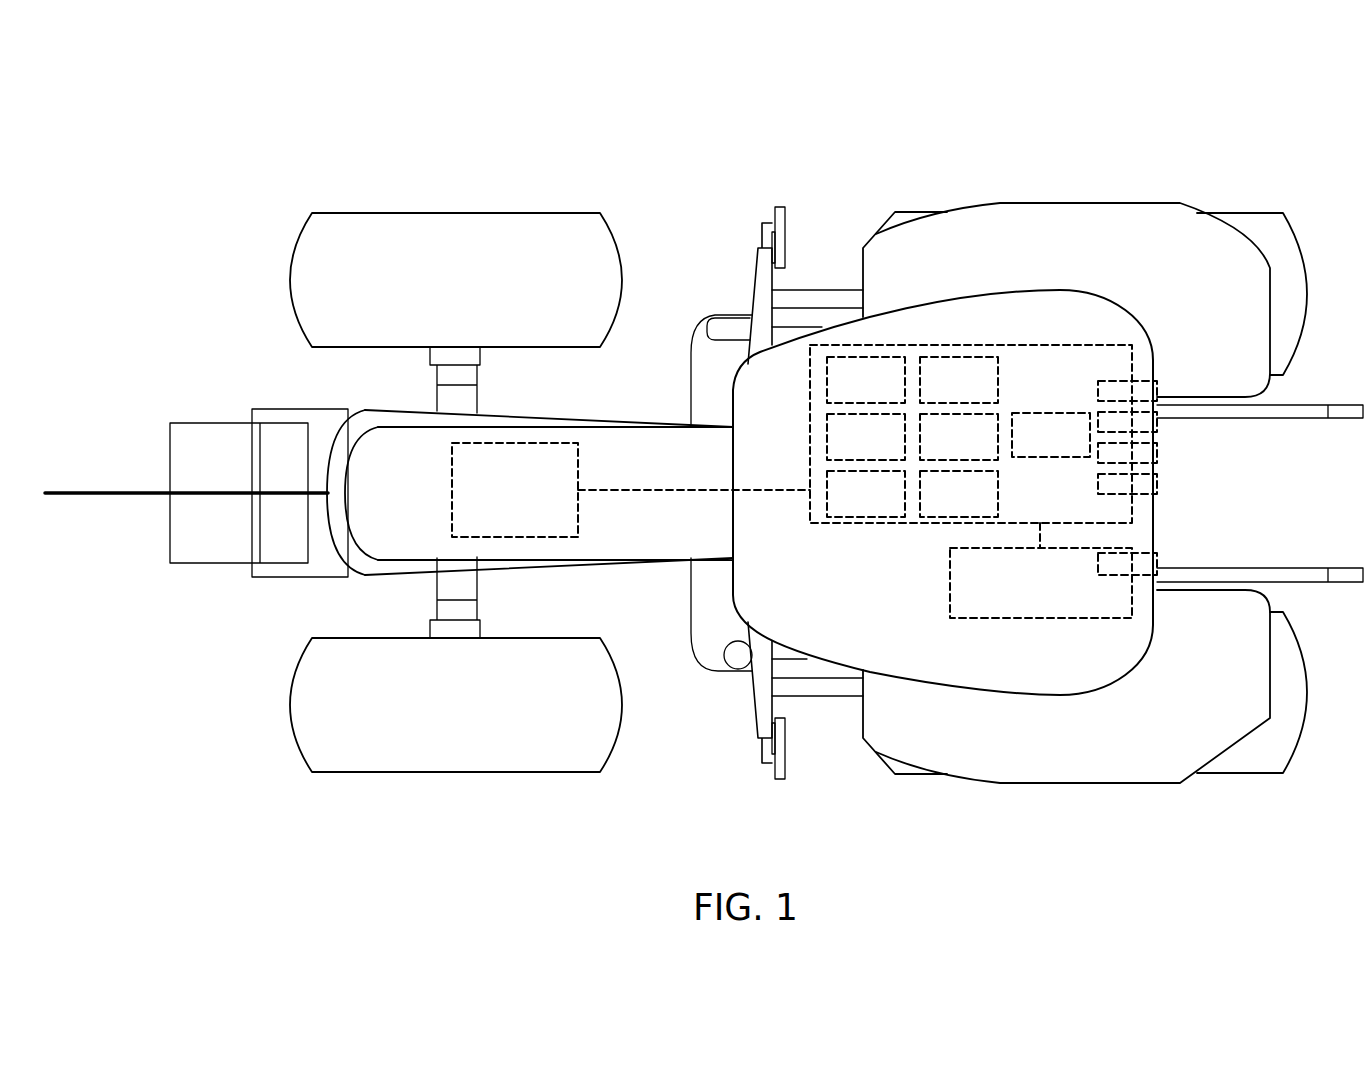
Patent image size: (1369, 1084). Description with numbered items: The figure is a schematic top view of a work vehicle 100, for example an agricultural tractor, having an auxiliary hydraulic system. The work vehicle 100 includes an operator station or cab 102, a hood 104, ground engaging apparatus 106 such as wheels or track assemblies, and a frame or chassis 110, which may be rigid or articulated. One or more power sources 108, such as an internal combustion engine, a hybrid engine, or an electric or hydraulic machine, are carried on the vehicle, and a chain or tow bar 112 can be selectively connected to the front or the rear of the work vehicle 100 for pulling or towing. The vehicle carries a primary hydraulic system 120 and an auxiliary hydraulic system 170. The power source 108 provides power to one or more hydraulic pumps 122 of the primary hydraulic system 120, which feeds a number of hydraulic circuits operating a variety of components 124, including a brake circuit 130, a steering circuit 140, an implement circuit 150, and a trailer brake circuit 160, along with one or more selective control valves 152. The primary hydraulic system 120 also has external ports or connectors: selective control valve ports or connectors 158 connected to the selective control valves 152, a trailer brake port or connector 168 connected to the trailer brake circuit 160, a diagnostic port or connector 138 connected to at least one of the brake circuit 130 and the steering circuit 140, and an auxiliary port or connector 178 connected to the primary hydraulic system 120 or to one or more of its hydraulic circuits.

The work vehicle 100 is at (302, 132).
The operator station or cab 102 is at (1070, 317).
The hood 104 is at (387, 473).
The ground engaging apparatus 106 is at (462, 243).
The power source 108 is at (537, 503).
The frame or chassis 110 is at (722, 250).
The chain or tow bar 112 is at (75, 492).
The primary hydraulic system 120 is at (1015, 345).
The hydraulic pump 122 is at (888, 393).
The components 124 is at (888, 452).
The brake circuit 130 is at (981, 393).
The diagnostic port or connector 138 is at (1157, 388).
The steering circuit 140 is at (981, 452).
The implement circuit 150 is at (981, 505).
The selective control valve 152 is at (888, 505).
The selective control valve port or connector 158 is at (1157, 425).
The trailer brake circuit 160 is at (1073, 447).
The trailer brake port or connector 168 is at (1157, 485).
The auxiliary hydraulic system 170 is at (1060, 597).
The auxiliary port or connector 178 is at (1148, 549).